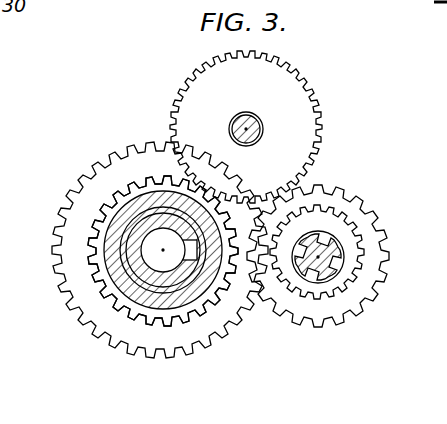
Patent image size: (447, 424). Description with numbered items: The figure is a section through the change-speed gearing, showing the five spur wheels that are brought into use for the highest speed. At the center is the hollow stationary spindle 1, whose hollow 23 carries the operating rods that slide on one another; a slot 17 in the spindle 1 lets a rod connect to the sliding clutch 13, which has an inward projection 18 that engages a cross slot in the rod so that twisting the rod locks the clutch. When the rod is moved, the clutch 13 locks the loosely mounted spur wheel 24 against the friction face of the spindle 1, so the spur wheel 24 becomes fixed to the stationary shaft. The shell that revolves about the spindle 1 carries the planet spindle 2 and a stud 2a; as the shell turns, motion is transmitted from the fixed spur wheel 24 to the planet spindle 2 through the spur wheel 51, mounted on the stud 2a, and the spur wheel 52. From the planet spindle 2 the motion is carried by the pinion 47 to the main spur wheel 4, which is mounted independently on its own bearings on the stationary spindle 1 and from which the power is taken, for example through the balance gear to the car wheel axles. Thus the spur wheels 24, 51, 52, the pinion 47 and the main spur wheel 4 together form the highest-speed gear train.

The stationary spindle 1 is at (140, 227).
The planet spindle 2 is at (304, 268).
The stud 2a is at (249, 115).
The main spur wheel 4 is at (65, 300).
The sliding clutch 13 is at (155, 299).
The slot 17 is at (175, 210).
The inward projection 18 is at (160, 258).
The hollow 23 is at (105, 212).
The spur wheel 24 is at (115, 302).
The pinion 47 is at (341, 298).
The spur wheel 51 is at (290, 81).
The spur wheel 52 is at (307, 318).